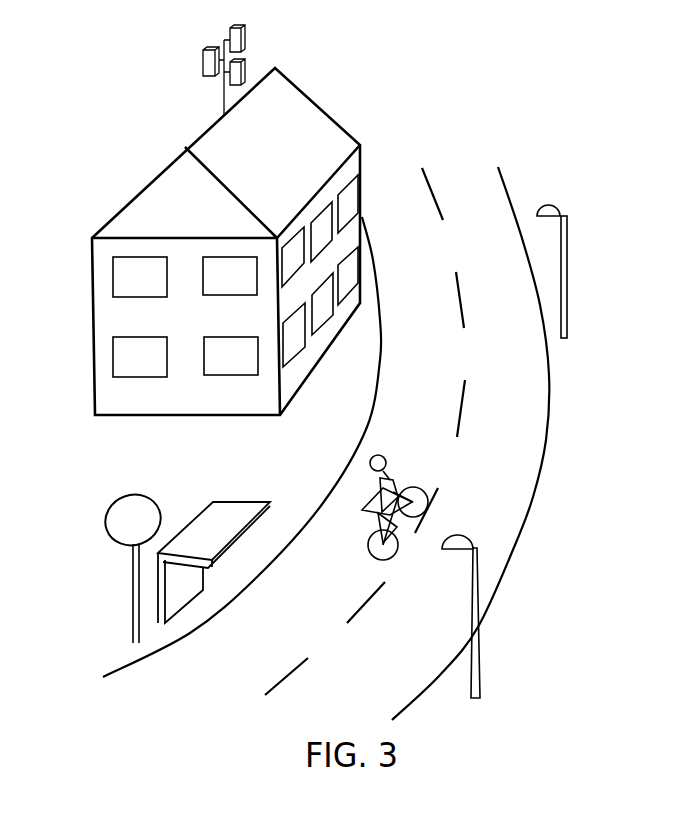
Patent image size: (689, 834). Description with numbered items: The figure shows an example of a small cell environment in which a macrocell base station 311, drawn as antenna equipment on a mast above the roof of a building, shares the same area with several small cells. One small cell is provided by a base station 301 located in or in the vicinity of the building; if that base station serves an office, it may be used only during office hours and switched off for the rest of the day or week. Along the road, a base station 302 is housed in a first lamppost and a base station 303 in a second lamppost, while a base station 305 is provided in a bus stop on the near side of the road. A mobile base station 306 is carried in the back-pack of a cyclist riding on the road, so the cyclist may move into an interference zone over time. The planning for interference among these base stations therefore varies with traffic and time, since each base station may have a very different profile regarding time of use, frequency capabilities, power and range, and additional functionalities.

The base station 301 is at (362, 168).
The base station 302 is at (563, 225).
The base station 303 is at (478, 593).
The base station 305 is at (105, 522).
The mobile base station 306 is at (377, 488).
The macrocell base station 311 is at (202, 67).